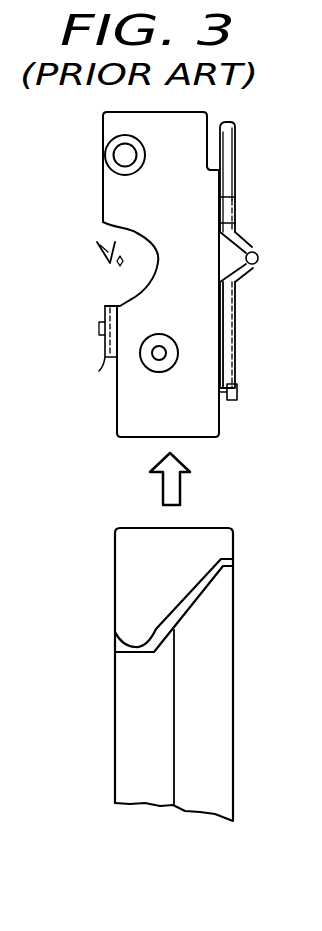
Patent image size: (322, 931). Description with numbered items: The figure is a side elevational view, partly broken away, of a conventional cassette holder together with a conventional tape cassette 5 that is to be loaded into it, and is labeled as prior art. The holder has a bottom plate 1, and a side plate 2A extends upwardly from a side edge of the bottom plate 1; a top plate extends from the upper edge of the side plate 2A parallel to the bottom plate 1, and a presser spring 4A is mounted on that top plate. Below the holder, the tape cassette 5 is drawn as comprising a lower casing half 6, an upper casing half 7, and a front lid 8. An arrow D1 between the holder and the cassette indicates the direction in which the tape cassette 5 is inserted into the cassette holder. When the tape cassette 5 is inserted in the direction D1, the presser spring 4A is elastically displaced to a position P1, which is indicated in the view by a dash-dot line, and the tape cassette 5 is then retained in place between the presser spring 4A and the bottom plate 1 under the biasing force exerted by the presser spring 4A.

The bottom plate 1 is at (232, 196).
The side plate 2A is at (205, 186).
The presser spring 4A is at (107, 250).
The position P1 is at (100, 245).
The direction D1 is at (162, 485).
The tape cassette 5 is at (178, 653).
The lower casing half 6 is at (208, 753).
The upper casing half 7 is at (133, 710).
The front lid 8 is at (150, 572).